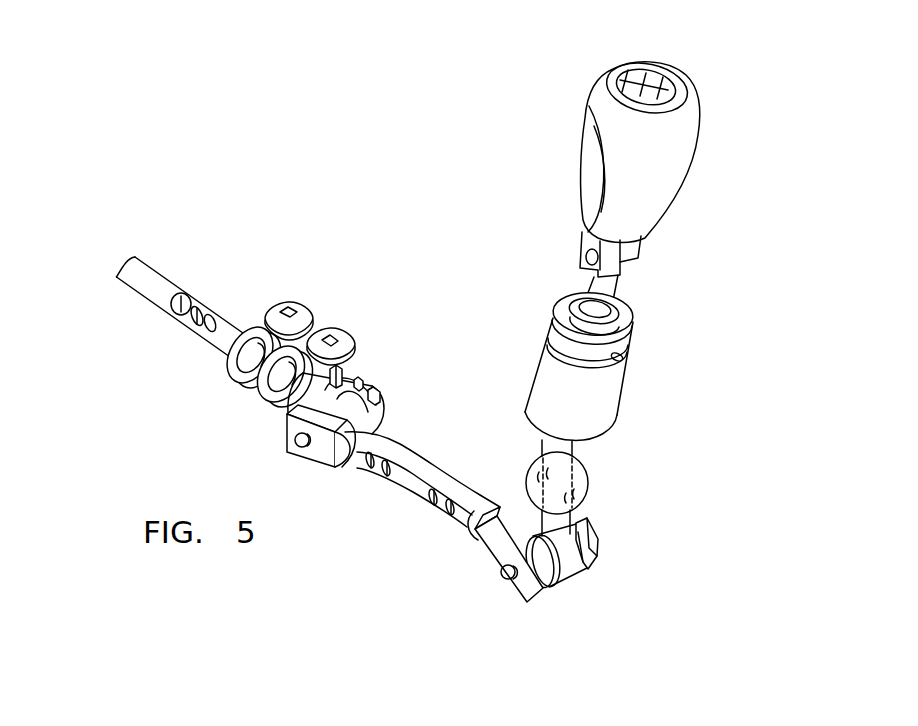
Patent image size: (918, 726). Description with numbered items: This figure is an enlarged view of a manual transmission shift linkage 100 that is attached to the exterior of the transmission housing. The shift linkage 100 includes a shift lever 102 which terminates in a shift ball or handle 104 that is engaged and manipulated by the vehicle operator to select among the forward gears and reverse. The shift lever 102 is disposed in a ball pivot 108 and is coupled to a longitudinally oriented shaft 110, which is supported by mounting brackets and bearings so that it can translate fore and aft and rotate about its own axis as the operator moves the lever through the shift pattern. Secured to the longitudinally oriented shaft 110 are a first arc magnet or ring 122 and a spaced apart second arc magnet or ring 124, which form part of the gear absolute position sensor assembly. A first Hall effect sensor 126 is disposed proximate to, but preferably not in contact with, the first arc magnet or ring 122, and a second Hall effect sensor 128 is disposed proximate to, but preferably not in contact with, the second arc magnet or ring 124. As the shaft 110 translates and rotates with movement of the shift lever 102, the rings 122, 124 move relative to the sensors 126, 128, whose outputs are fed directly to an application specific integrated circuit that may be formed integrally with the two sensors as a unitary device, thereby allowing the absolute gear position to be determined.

The shift linkage 100 is at (414, 213).
The shift lever 102 is at (607, 294).
The shift ball or handle 104 is at (652, 154).
The ball pivot 108 is at (578, 478).
The longitudinally oriented shaft 110 is at (149, 278).
The first arc magnet or ring 122 is at (270, 399).
The second arc magnet or ring 124 is at (234, 376).
The first Hall effect sensor 126 is at (355, 344).
The second Hall effect sensor 128 is at (290, 300).